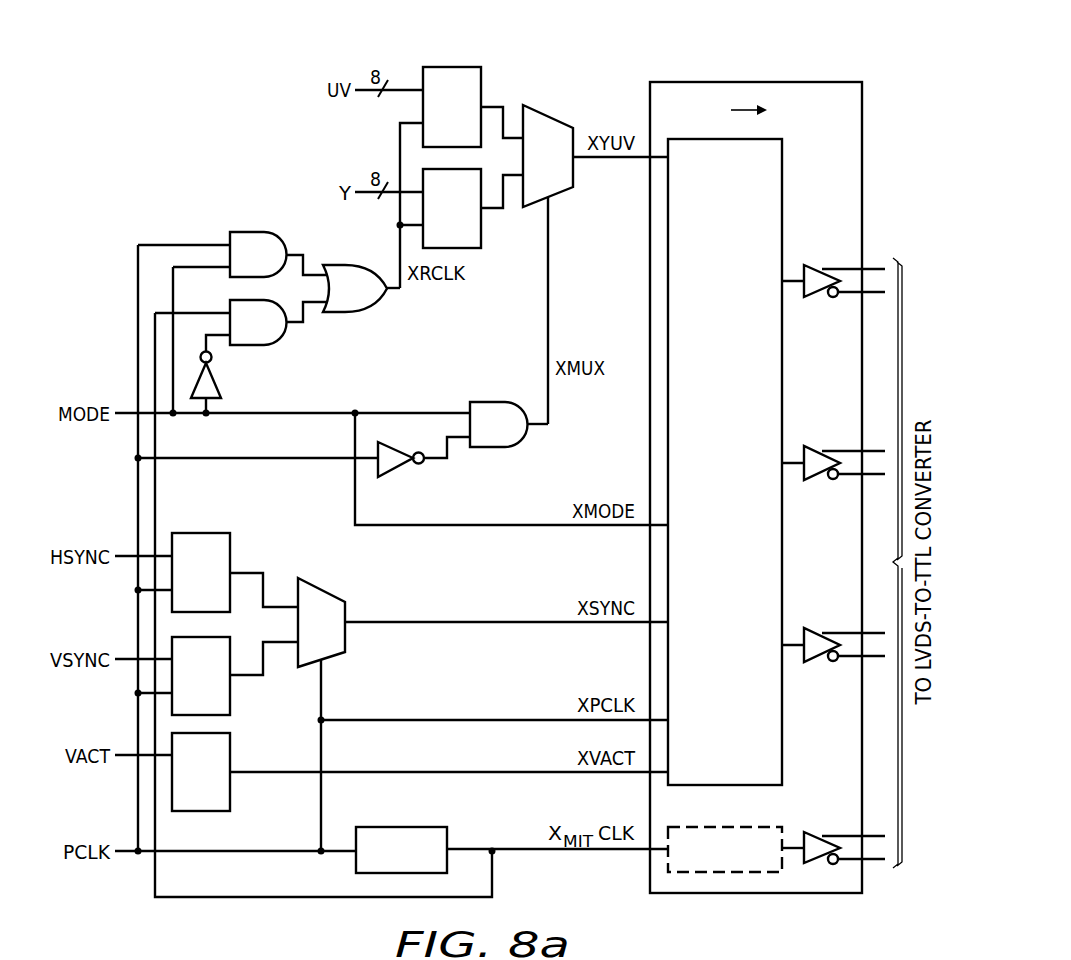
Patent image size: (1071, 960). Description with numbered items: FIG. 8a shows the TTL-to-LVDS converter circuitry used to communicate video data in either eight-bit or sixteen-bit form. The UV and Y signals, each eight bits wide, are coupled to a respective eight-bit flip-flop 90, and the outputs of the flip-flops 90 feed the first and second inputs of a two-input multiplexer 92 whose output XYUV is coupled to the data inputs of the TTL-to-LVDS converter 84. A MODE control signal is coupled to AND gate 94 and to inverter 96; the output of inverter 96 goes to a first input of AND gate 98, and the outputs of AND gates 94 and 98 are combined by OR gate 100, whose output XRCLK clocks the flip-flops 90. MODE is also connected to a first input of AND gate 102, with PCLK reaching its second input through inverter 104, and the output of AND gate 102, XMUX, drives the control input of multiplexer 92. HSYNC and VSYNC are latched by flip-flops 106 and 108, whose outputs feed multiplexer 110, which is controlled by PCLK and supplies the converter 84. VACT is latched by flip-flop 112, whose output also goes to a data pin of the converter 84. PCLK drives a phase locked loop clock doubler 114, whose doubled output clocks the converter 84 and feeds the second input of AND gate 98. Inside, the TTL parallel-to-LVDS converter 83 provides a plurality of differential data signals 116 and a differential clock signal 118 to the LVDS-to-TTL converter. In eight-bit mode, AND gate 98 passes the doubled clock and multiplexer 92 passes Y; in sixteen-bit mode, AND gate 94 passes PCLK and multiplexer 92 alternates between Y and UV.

The TTL-to-LVDS converter 83 is at (712, 534).
The TTL-to-LVDS converter 84 is at (757, 82).
The flip-flop 90 is at (508, 244).
The multiplexer 92 is at (553, 118).
The AND gate 94 is at (262, 232).
The inverter 96 is at (219, 383).
The AND gate 98 is at (277, 347).
The OR gate 100 is at (355, 314).
The AND gate 102 is at (500, 452).
The inverter 104 is at (395, 470).
The flip-flop 106 is at (198, 532).
The flip-flop 108 is at (232, 695).
The multiplexer 110 is at (325, 582).
The flip-flop 112 is at (232, 790).
The phase locked loop clock doubler 114 is at (447, 838).
The differential data signals 116 is at (808, 628).
The differential clock signal 118 is at (808, 832).